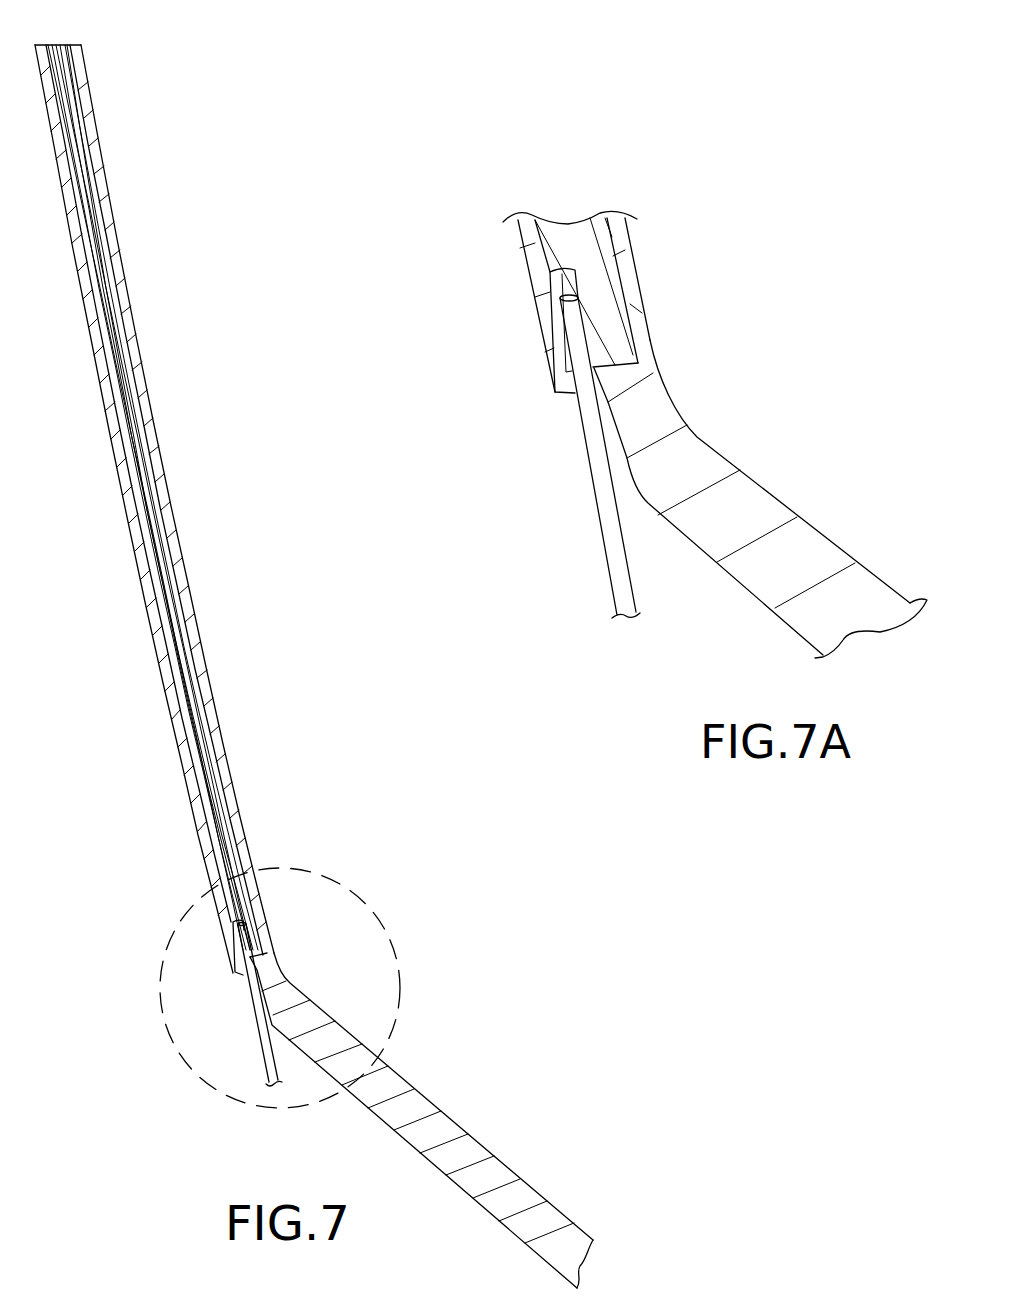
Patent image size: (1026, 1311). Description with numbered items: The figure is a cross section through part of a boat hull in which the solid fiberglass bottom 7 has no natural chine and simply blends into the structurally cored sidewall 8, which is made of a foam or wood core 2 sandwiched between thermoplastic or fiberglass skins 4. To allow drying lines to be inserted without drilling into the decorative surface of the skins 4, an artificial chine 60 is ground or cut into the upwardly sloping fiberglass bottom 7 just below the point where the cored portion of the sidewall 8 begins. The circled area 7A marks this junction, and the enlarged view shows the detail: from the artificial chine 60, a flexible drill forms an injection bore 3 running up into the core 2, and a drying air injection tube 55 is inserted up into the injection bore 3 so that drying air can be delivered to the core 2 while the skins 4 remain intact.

In FIG. 7, the structurally cored sidewall 8 is at (56, 355).
In FIG. 7, the fiberglass skins 4 is at (155, 438).
In FIG. 7A, the fiberglass skins 4 is at (532, 258).
In FIG. 7, the foam or wood core 2 is at (215, 793).
In FIG. 7A, the foam or wood core 2 is at (567, 224).
In FIG. 7A, the injection bore 3 is at (583, 277).
In FIG. 7, the solid fiberglass bottom 7 is at (433, 1100).
In FIG. 7, the circled area 7A is at (247, 1104).
In FIG. 7A, the drying air injection tube 55 is at (607, 507).
In FIG. 7A, the artificial chine 60 is at (570, 395).